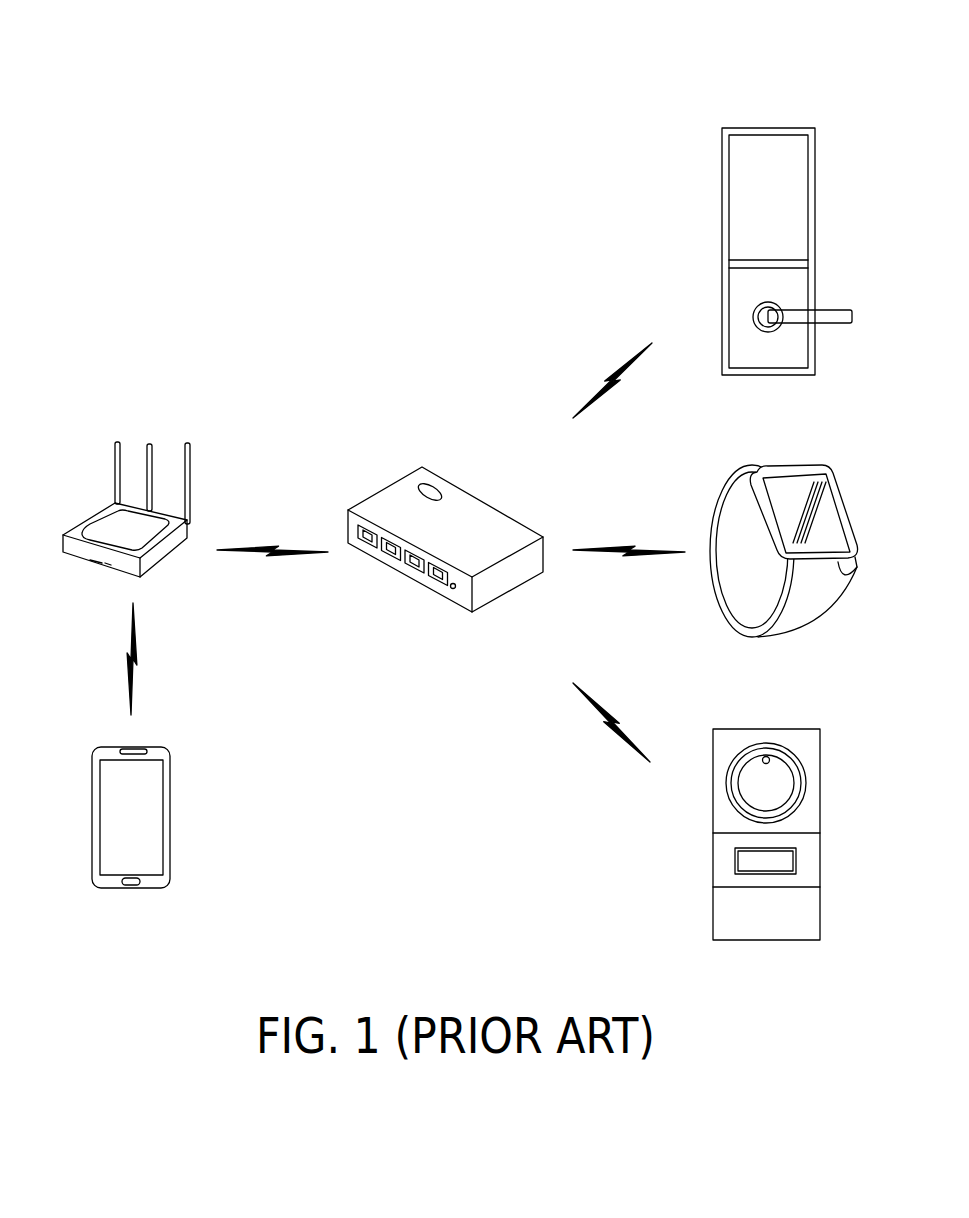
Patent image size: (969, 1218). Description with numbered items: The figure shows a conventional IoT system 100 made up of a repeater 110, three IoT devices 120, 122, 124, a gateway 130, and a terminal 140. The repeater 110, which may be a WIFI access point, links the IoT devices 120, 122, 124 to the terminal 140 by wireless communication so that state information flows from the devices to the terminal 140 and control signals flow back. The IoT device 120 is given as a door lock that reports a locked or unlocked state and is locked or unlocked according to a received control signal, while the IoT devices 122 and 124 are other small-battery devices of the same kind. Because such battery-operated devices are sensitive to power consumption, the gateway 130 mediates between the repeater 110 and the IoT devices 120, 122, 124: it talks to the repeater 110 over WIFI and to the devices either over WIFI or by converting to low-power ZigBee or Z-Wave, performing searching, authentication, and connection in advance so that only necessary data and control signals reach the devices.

The conventional IoT system 100 is at (315, 210).
The repeater 110 is at (187, 441).
The IoT device 120 is at (790, 127).
The IoT device 122 is at (818, 482).
The IoT device 124 is at (788, 728).
The gateway 130 is at (455, 487).
The terminal 140 is at (163, 748).